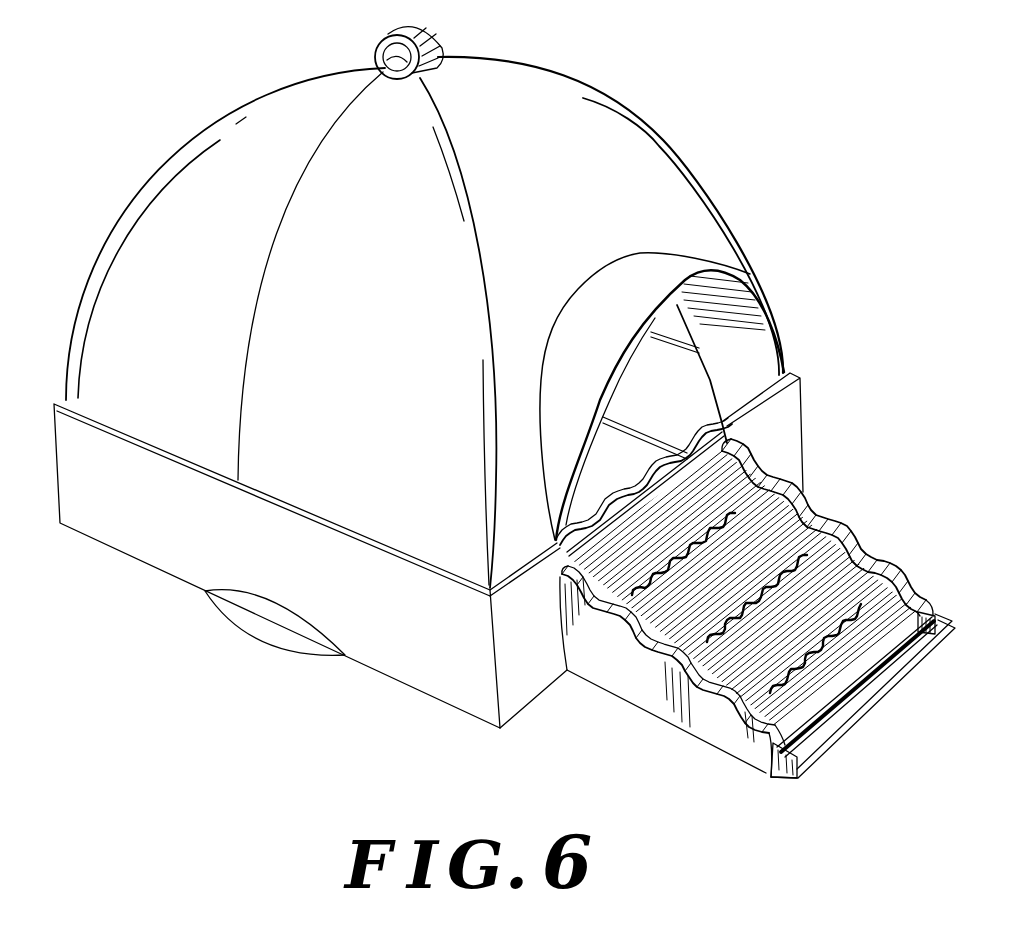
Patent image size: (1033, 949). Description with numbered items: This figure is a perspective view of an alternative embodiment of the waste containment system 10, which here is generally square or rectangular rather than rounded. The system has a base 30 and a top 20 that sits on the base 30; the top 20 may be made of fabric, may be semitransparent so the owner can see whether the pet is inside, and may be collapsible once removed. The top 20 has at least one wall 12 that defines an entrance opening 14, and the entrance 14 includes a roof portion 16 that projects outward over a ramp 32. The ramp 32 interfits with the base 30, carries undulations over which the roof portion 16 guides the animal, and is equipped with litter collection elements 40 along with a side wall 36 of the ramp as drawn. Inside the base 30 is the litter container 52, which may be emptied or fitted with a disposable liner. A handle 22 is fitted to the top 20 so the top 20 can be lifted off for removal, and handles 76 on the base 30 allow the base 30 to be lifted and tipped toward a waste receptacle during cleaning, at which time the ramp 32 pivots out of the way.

The waste containment system 10 is at (596, 87).
The wall 12 is at (682, 203).
The entrance opening 14 is at (702, 402).
The roof portion 16 is at (650, 270).
The top 20 is at (293, 103).
The handle 22 is at (428, 33).
The base 30 is at (425, 648).
The ramp 32 is at (830, 740).
The ramp side wall 36 is at (657, 608).
The litter collection elements 40 is at (883, 557).
The litter container 52 is at (608, 457).
The handles 76 is at (265, 625).